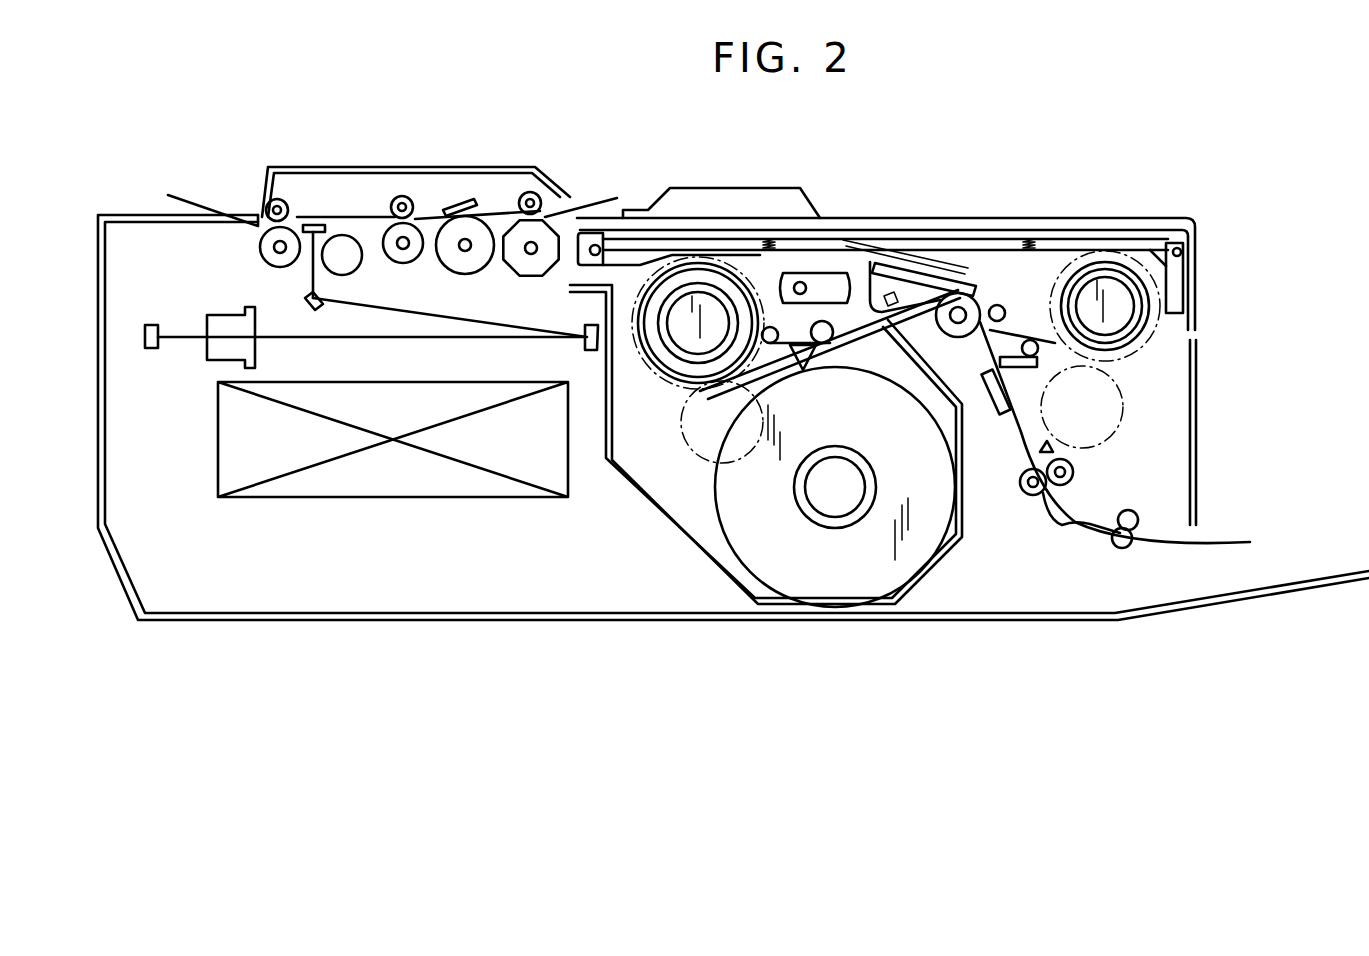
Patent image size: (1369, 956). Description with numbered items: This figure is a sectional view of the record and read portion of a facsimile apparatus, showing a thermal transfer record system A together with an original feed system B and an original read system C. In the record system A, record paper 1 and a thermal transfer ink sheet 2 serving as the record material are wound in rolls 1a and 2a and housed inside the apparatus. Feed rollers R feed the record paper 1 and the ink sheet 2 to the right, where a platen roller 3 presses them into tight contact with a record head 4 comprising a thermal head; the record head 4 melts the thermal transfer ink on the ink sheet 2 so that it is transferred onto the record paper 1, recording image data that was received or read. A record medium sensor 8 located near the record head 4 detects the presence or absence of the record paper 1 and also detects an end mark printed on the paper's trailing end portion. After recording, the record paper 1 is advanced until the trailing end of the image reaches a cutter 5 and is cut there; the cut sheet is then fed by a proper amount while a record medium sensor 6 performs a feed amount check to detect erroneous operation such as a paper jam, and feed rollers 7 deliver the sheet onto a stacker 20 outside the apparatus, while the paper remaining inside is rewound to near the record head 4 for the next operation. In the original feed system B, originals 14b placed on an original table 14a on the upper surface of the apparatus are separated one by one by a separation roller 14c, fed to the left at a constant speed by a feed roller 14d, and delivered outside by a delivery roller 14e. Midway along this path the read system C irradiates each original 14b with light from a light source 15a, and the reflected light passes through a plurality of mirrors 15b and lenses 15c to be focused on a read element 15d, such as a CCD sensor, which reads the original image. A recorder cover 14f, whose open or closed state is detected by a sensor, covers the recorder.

The record system A is at (998, 218).
The original feed system B is at (355, 208).
The read system C is at (206, 346).
The feed rollers R is at (803, 377).
The record paper 1 is at (1173, 545).
The roll 1a is at (725, 484).
The thermal transfer ink sheet 2 is at (1042, 333).
The roll 2a is at (664, 385).
The platen roller 3 is at (950, 336).
The record head 4 is at (880, 262).
The cutter 5 is at (1001, 416).
The record medium sensor 6 is at (1055, 452).
The feed rollers 7 is at (1064, 527).
The record medium sensor 8 is at (806, 308).
The original table 14a is at (695, 216).
The originals 14b is at (597, 200).
The separation roller 14c is at (475, 270).
The feed roller 14d is at (417, 265).
The delivery roller 14e is at (262, 249).
The recorder cover 14f is at (770, 213).
The light source 15a is at (350, 252).
The mirrors 15b is at (302, 298).
The lenses 15c is at (232, 315).
The read element 15d is at (150, 325).
The stacker 20 is at (1244, 600).